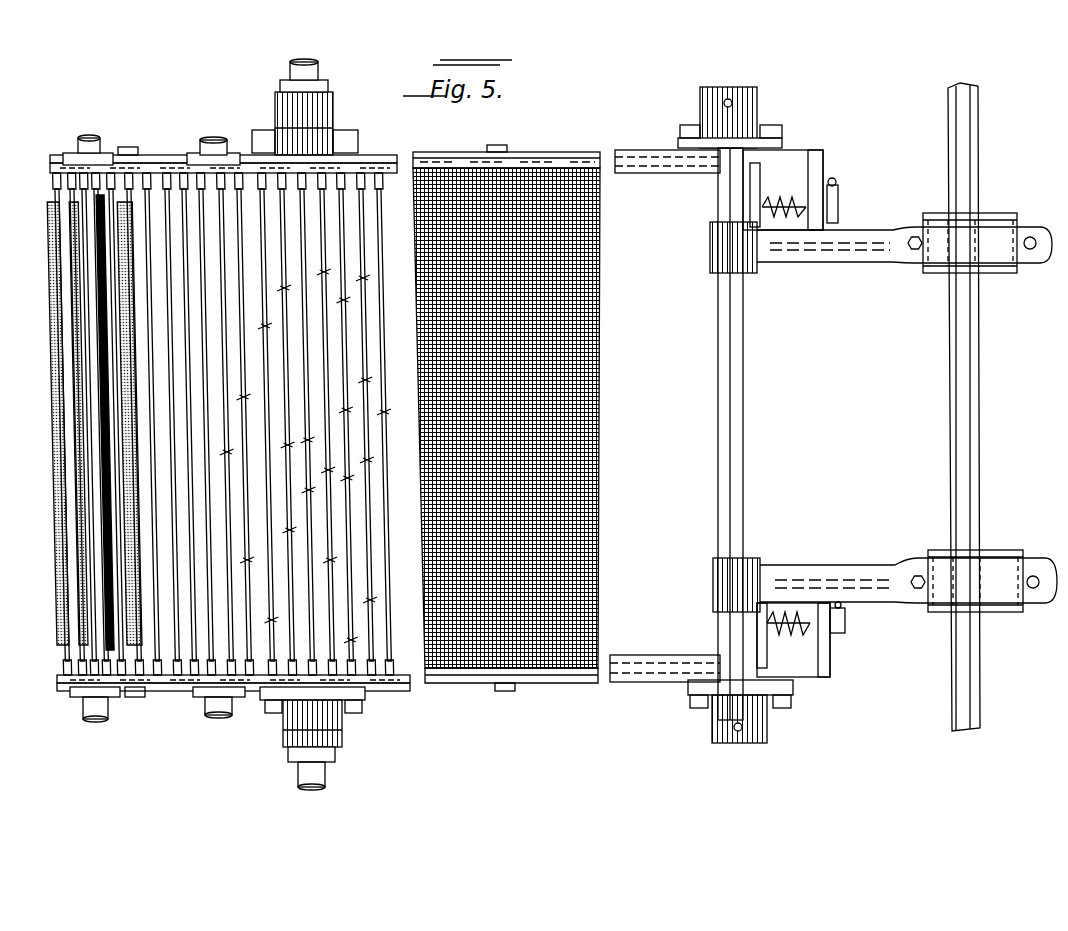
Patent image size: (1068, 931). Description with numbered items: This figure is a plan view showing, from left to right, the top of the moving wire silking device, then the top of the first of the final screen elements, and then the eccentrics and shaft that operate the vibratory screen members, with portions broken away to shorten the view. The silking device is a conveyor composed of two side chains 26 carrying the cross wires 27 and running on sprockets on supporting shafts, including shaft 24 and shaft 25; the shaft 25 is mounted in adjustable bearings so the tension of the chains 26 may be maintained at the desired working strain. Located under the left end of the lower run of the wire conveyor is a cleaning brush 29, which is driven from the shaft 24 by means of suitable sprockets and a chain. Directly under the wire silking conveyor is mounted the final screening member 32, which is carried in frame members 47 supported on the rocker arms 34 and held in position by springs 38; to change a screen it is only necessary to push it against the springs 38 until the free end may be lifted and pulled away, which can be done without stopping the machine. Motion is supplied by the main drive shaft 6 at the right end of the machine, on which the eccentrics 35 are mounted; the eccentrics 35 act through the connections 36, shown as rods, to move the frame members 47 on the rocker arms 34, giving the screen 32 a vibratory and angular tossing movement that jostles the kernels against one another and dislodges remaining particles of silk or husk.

The main drive shaft 6 is at (957, 120).
The shaft 24 is at (88, 140).
The shaft 25 is at (215, 140).
The side chains 26 is at (165, 170).
The cross wires 27 is at (68, 338).
The cleaning brush 29 is at (55, 293).
The final screening member 32 is at (565, 340).
The rocker arms 34 is at (355, 150).
The eccentrics 35 is at (938, 213).
The connections 36 is at (862, 258).
The springs 38 is at (790, 197).
The frame members 47 is at (550, 160).